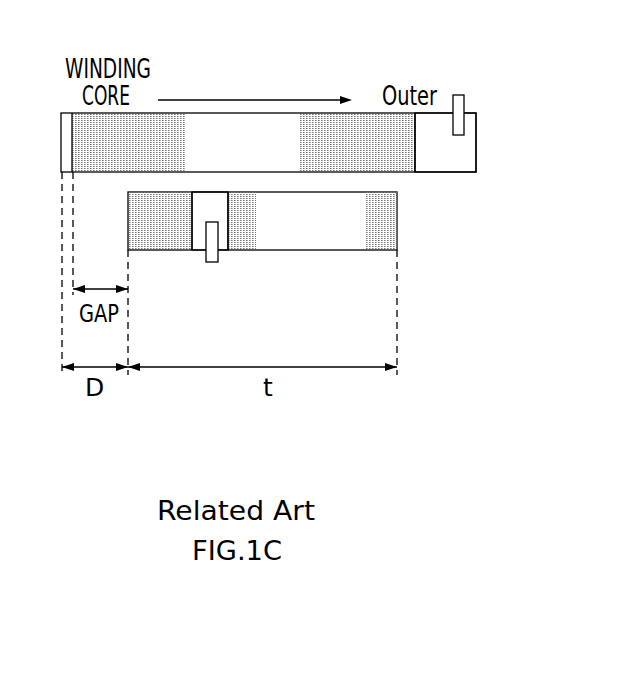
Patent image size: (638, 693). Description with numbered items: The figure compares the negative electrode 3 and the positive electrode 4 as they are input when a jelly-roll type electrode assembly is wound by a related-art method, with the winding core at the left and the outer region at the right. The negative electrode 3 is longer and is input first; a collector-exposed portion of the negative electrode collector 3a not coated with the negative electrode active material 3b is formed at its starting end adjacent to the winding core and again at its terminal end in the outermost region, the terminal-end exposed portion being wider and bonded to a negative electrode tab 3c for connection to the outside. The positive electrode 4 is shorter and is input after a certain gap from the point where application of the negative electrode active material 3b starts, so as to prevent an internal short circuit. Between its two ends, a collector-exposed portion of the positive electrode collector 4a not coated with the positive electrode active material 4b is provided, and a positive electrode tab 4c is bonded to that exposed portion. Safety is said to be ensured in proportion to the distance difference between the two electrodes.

The negative electrode 3 is at (299, 91).
The negative electrode collector 3a is at (433, 153).
The negative electrode active material 3b is at (305, 125).
The negative electrode tab 3c is at (457, 95).
The positive electrode 4 is at (294, 257).
The positive electrode collector 4a is at (223, 243).
The positive electrode active material 4b is at (377, 247).
The positive electrode tab 4c is at (210, 262).